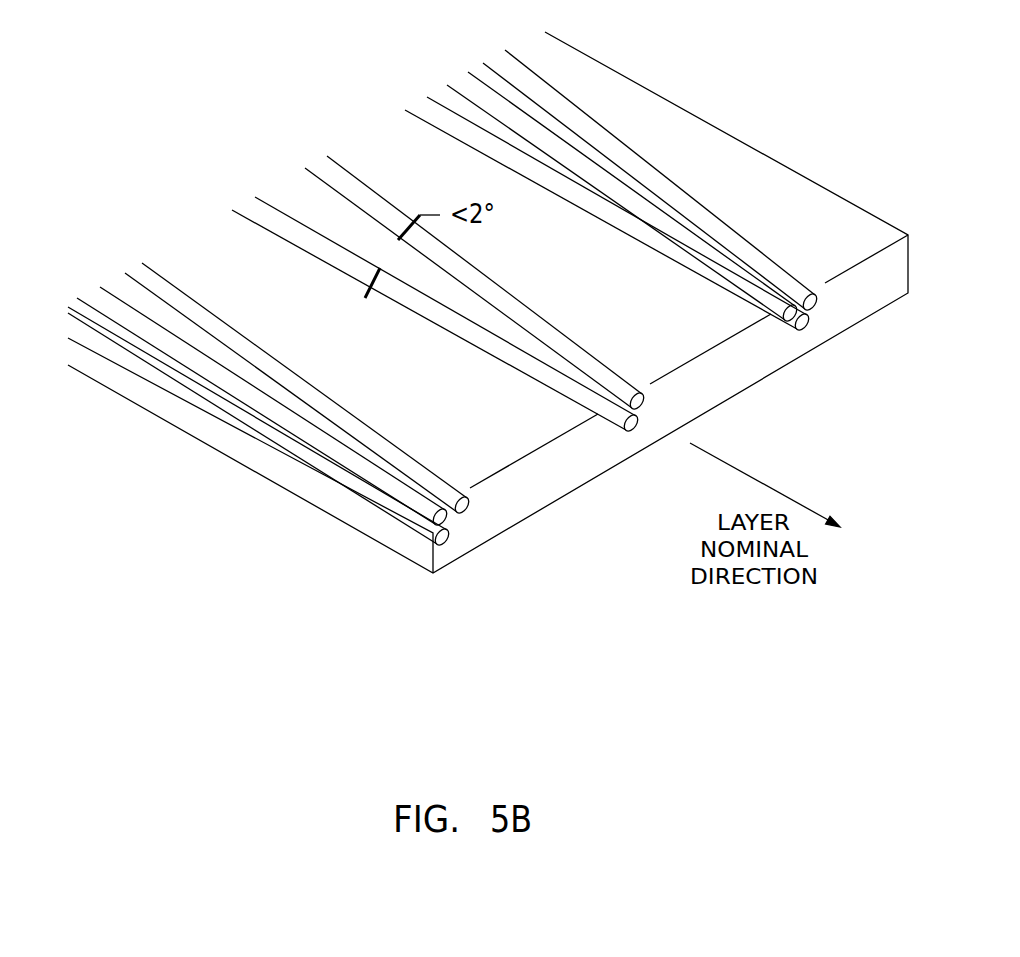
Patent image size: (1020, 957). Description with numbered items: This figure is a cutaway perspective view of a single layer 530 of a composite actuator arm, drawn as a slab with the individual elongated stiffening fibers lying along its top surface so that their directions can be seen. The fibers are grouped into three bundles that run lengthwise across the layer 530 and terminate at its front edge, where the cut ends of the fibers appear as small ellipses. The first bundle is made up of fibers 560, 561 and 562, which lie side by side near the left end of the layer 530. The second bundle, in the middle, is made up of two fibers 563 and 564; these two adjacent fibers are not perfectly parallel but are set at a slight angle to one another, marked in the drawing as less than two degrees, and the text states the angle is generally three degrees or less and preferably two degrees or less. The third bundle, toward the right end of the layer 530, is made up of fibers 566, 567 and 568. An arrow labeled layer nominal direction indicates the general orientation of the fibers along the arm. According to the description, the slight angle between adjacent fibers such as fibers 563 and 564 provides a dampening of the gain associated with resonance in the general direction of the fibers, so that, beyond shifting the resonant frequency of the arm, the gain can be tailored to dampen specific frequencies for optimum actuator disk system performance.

The layer 530 is at (733, 130).
The elongated stiffening fiber 560 is at (420, 503).
The elongated stiffening fiber 561 is at (448, 540).
The elongated stiffening fiber 562 is at (468, 502).
The elongated stiffening fiber 563 is at (510, 294).
The elongated stiffening fiber 564 is at (613, 428).
The elongated stiffening fiber 566 is at (703, 257).
The elongated stiffening fiber 567 is at (813, 325).
The elongated stiffening fiber 568 is at (740, 228).